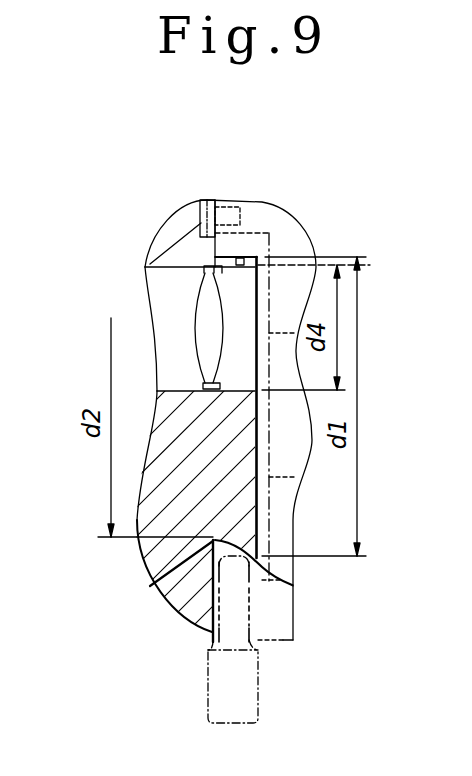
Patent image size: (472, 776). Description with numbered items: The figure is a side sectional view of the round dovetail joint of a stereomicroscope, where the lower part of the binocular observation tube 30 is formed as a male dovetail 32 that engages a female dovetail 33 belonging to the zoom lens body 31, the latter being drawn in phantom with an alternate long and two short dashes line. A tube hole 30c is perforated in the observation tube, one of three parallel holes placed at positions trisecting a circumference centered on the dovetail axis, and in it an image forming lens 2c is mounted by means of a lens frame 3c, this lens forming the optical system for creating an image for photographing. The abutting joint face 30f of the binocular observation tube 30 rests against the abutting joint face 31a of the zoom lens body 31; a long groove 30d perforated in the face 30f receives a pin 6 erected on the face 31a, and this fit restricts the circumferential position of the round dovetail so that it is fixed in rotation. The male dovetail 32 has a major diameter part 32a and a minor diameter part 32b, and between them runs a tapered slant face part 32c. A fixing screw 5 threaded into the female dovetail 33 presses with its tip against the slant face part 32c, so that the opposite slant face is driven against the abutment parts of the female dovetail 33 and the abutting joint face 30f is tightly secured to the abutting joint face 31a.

The image forming lens 2c is at (207, 307).
The lens frame 3c is at (212, 263).
The fixing screw 5 is at (222, 680).
The pin 6 is at (221, 203).
The binocular observation tube 30 is at (173, 488).
The tube hole 30c is at (168, 335).
The long groove 30d is at (207, 198).
The abutting joint face 30f is at (215, 244).
The zoom lens body 31 is at (293, 641).
The abutting joint face 31a is at (208, 630).
The male dovetail 32 is at (257, 517).
The major diameter part 32a is at (292, 585).
The minor diameter part 32b is at (145, 562).
The slant face part 32c is at (158, 592).
The female dovetail 33 is at (270, 458).